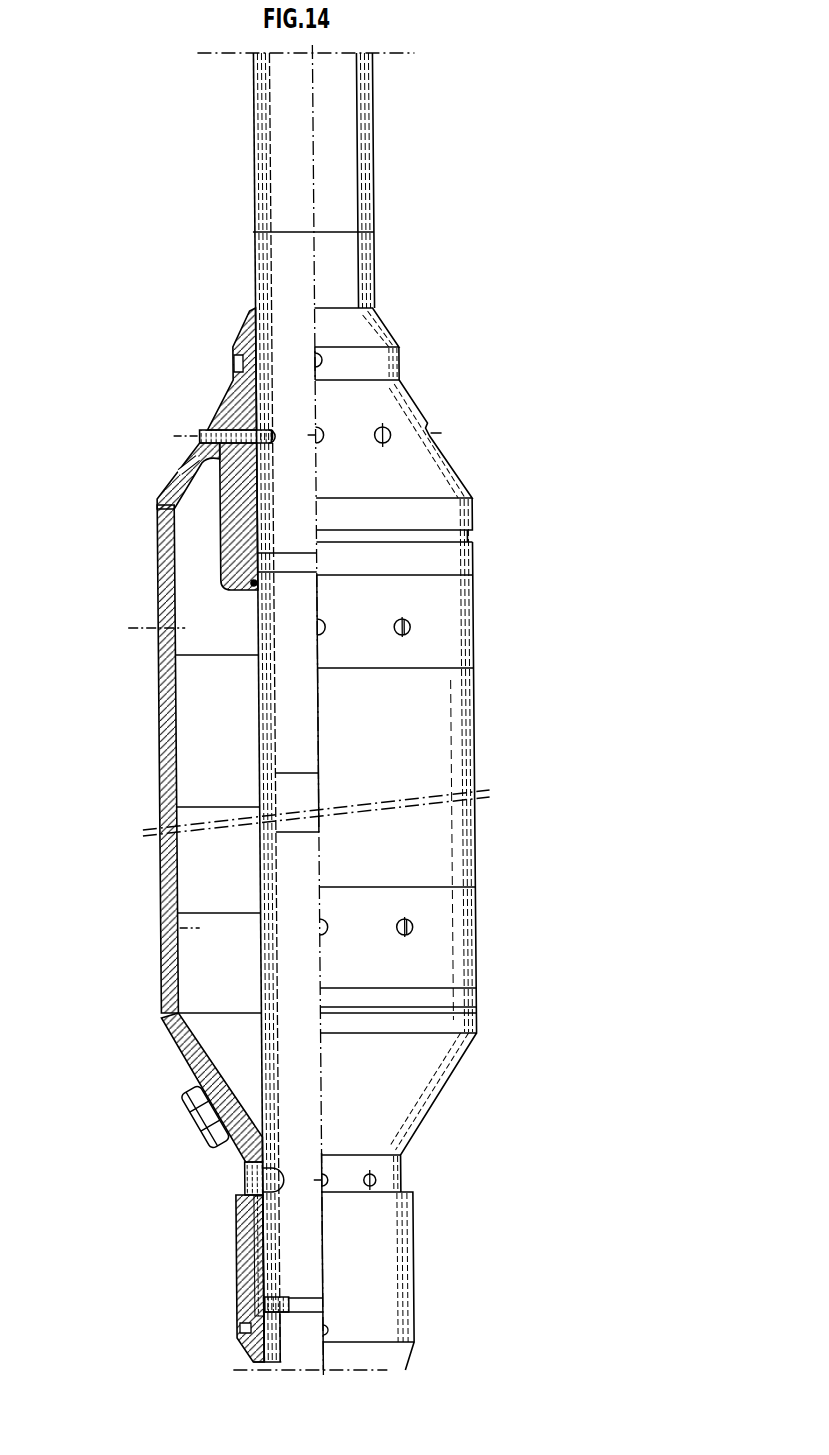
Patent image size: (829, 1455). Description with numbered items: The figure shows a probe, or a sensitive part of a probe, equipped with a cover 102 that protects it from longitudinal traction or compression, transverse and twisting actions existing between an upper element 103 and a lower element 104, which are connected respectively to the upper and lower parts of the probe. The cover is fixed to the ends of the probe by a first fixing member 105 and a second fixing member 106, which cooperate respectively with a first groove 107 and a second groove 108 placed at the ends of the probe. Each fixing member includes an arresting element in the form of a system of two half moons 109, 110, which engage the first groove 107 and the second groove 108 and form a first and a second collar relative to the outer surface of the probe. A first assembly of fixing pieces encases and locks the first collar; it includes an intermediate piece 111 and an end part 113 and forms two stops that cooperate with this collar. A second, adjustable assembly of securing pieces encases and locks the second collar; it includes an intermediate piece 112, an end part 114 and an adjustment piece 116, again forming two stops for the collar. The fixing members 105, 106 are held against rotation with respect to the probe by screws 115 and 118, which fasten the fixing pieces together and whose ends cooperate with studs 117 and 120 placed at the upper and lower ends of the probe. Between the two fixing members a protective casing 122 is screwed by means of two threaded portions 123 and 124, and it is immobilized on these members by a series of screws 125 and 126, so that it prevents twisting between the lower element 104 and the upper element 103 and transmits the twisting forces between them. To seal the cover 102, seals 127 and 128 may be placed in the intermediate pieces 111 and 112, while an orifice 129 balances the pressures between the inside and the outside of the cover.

The cover 102 is at (500, 746).
The upper element 103 is at (252, 151).
The lower element 104 is at (240, 1356).
The first fixing member 105 is at (152, 318).
The second fixing member 106 is at (165, 1328).
The first groove 107 is at (286, 553).
The second groove 108 is at (284, 1297).
The half moons 109 is at (219, 591).
The half moons 110 is at (258, 1314).
The intermediate piece 111 is at (155, 505).
The intermediate piece 112 is at (152, 1000).
The end part 113 is at (249, 328).
The end part 114 is at (229, 1276).
The screw 115 is at (196, 430).
The adjustment piece 116 is at (254, 1240).
The stud 117 is at (262, 430).
The screw 118 is at (234, 1178).
The stud 120 is at (264, 1176).
The protective casing 122 is at (153, 770).
The threaded portion 123 is at (155, 590).
The threaded portion 124 is at (153, 950).
The screws 125 is at (396, 636).
The screws 126 is at (397, 916).
The seal 127 is at (251, 584).
The seal 128 is at (255, 1128).
The orifice 129 is at (184, 464).